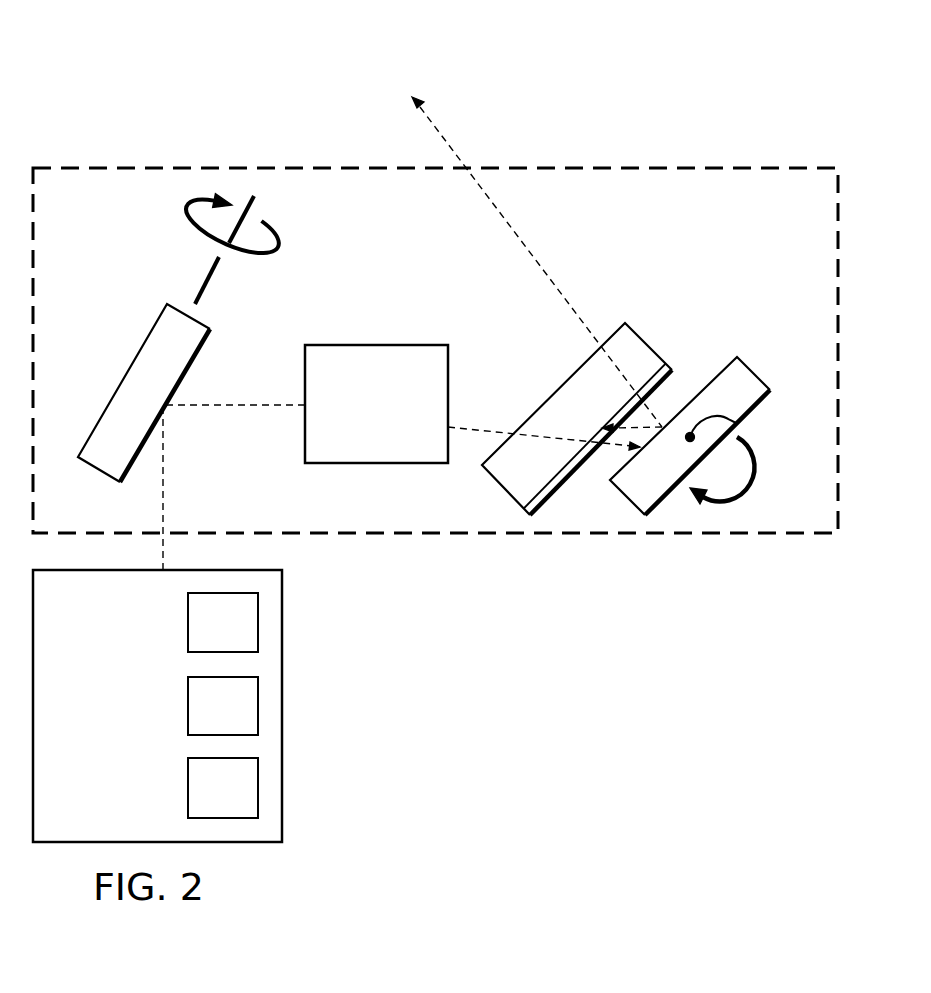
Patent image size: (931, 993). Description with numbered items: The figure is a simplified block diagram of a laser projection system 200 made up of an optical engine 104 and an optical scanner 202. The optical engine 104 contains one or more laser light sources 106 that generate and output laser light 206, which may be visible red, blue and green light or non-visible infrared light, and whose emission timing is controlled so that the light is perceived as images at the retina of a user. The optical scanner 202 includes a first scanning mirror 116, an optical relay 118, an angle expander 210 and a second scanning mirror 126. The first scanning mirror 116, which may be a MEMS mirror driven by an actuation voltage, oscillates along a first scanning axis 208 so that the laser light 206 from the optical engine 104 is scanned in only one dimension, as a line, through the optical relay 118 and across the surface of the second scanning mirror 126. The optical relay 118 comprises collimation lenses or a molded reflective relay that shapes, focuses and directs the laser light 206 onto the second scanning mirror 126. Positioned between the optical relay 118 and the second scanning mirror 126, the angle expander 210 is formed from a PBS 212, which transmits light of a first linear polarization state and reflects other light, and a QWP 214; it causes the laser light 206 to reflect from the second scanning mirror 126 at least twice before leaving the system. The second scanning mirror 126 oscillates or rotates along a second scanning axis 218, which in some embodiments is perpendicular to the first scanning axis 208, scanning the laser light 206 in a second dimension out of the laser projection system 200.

The laser projection system 200 is at (210, 74).
The optical scanner 202 is at (152, 166).
The laser light 206 is at (165, 480).
The first scanning axis 208 is at (208, 272).
The first scanning mirror 116 is at (122, 380).
The optical relay 118 is at (376, 345).
The angle expander 210 is at (645, 313).
The PBS 212 is at (558, 402).
The QWP 214 is at (665, 372).
The second scanning mirror 126 is at (783, 360).
The second scanning axis 218 is at (738, 422).
The optical engine 104 is at (139, 767).
The laser light sources 106 is at (202, 636).